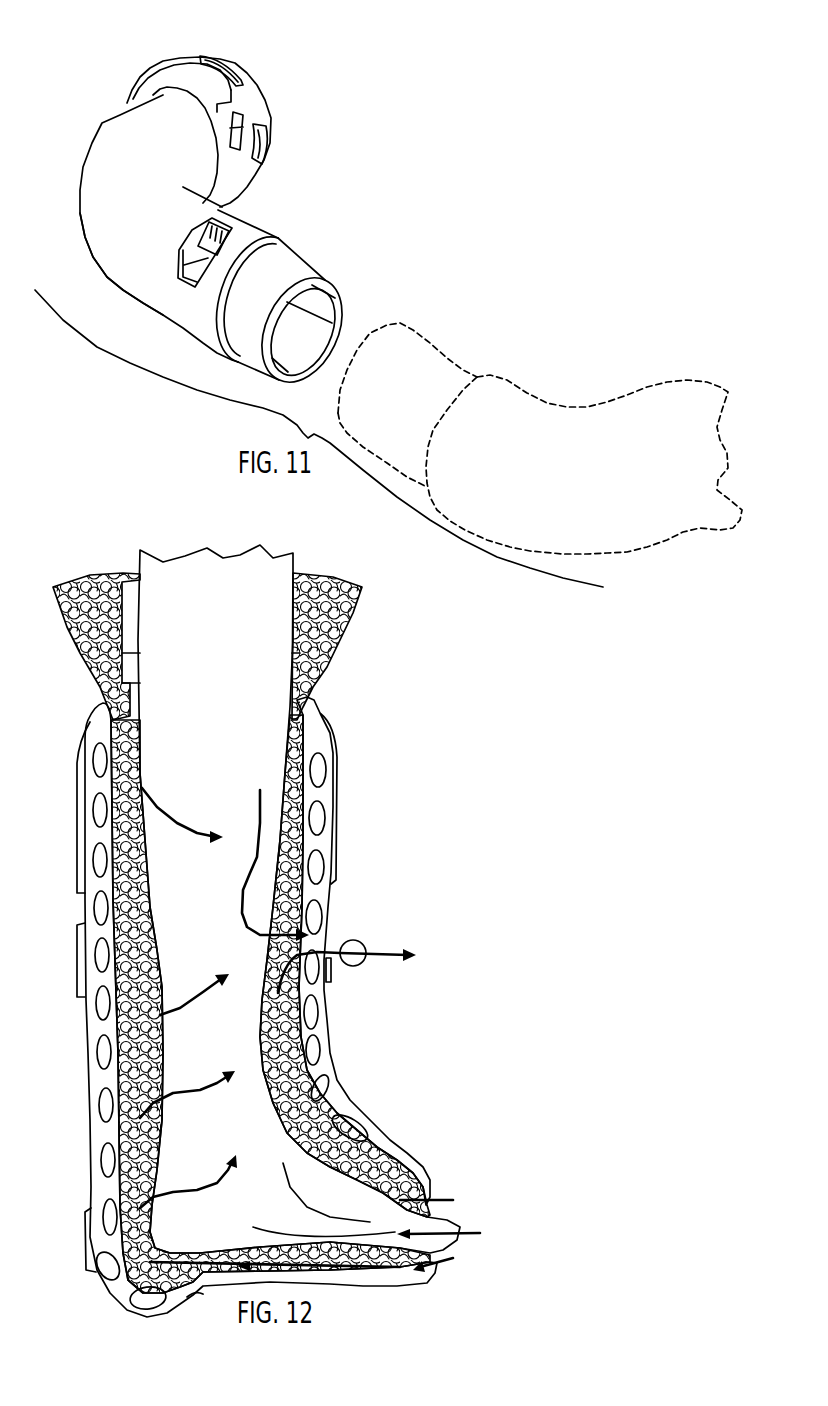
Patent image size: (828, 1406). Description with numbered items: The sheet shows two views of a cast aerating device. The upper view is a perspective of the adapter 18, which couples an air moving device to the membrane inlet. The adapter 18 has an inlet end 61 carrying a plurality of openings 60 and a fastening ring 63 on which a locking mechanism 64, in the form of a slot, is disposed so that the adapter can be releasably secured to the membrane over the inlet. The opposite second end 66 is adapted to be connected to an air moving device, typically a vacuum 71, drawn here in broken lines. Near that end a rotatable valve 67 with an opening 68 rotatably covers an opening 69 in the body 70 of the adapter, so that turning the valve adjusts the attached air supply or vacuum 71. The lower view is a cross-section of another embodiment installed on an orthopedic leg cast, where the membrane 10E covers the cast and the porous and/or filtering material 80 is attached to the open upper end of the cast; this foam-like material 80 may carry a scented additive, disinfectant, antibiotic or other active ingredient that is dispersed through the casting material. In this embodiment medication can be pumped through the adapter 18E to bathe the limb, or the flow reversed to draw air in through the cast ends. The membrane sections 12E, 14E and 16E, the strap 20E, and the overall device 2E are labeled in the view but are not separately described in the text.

In FIG. 11, the adapter 18 is at (101, 118).
In FIG. 11, the openings 60 is at (221, 56).
In FIG. 11, the inlet end 61 is at (238, 61).
In FIG. 11, the fastening ring 63 is at (152, 68).
In FIG. 11, the locking mechanism 64 is at (243, 117).
In FIG. 11, the second end 66 is at (307, 268).
In FIG. 11, the rotatable valve 67 is at (256, 224).
In FIG. 11, the opening 68 is at (182, 265).
In FIG. 11, the opening 69 is at (208, 228).
In FIG. 11, the body 70 is at (140, 294).
In FIG. 11, the vacuum 71 is at (433, 343).
In FIG. 12, the porous and/or filtering material 80 is at (77, 640).
In FIG. 12, the boot garment 2E is at (240, 1007).
In FIG. 12, the membrane 10E is at (329, 904).
In FIG. 12, the foam liner 12E is at (330, 1008).
In FIG. 12, the foot shell 14E is at (362, 1106).
In FIG. 12, the fastener tab 16E is at (338, 857).
In FIG. 12, the adapter 18E is at (366, 968).
In FIG. 12, the strap 20E is at (78, 962).